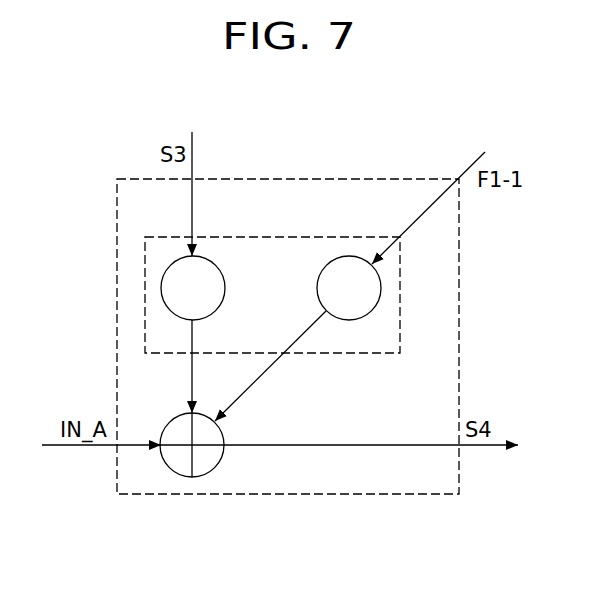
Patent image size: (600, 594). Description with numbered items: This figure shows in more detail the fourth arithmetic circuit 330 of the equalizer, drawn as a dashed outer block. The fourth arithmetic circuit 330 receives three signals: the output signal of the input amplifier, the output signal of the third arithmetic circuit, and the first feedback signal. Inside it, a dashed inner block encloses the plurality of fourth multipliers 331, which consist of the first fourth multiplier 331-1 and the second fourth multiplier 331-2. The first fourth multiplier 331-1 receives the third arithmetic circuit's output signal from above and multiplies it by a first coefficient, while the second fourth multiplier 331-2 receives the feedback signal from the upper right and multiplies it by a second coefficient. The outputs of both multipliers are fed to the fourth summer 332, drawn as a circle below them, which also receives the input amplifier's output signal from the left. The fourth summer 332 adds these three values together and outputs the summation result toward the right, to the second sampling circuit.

The fourth arithmetic circuit 330 is at (287, 178).
The fourth multipliers 331 is at (276, 236).
The 4-1 multiplier 331-1 is at (162, 279).
The 4-2 multiplier 331-2 is at (352, 320).
The fourth summer 332 is at (173, 420).